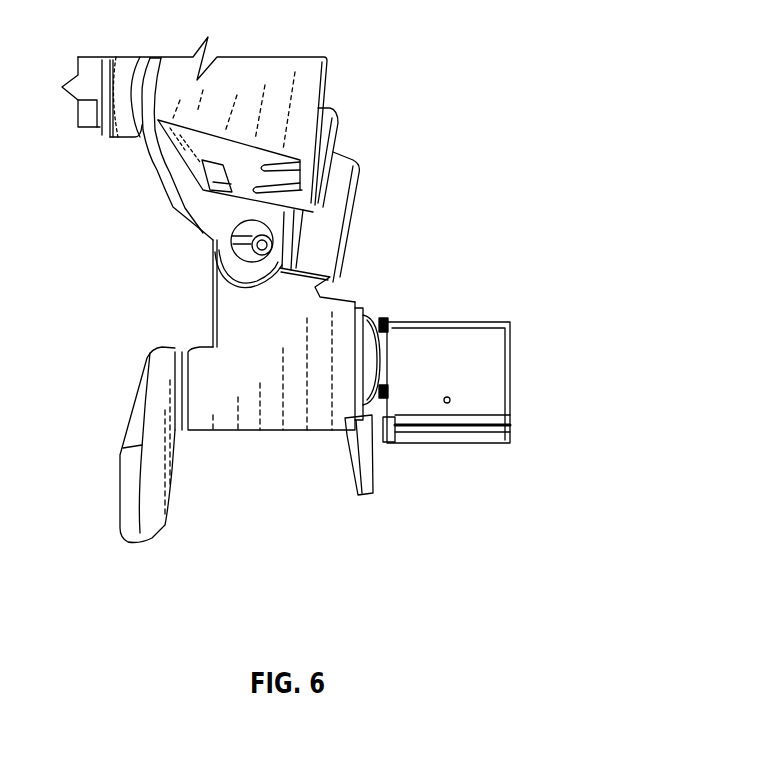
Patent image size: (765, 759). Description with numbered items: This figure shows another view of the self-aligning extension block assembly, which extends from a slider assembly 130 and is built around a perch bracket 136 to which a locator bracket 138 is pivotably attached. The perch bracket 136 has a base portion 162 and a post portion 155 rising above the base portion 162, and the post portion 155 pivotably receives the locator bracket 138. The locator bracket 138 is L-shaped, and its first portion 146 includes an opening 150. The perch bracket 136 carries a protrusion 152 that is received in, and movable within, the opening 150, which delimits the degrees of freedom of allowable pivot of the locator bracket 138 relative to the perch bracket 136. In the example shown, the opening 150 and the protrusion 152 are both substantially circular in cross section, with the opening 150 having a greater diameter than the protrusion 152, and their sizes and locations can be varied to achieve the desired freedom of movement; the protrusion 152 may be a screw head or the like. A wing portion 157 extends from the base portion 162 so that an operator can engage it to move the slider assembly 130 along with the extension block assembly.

The slider assembly 130 is at (487, 363).
The perch bracket 136 is at (297, 387).
The locator bracket 138 is at (322, 137).
The first portion 146 is at (292, 247).
The opening 150 is at (183, 212).
The protrusion 152 is at (252, 247).
The post portion 155 is at (267, 288).
The wing portion 157 is at (145, 422).
The base portion 162 is at (275, 410).